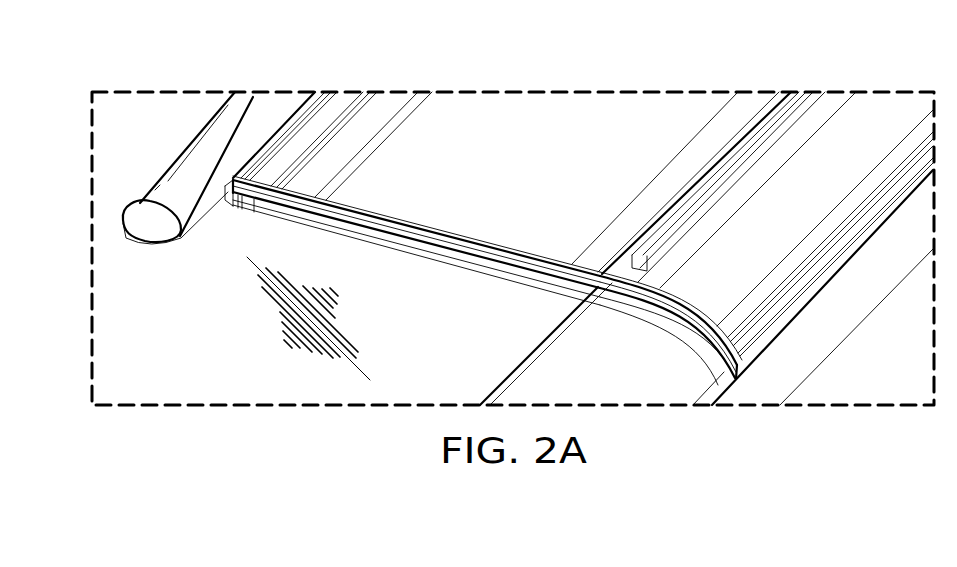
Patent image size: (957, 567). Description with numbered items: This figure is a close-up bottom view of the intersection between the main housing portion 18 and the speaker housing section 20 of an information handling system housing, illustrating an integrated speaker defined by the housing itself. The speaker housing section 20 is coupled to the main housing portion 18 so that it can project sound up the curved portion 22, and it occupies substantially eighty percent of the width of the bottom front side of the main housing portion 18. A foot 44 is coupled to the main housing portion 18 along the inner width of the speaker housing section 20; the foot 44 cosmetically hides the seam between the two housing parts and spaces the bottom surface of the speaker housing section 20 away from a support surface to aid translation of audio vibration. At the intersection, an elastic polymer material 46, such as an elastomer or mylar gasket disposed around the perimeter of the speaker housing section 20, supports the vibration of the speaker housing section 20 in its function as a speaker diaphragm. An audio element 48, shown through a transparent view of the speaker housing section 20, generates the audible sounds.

The main housing portion 18 is at (264, 400).
The speaker housing section 20 is at (512, 100).
The curved portion 22 is at (857, 328).
The foot 44 is at (188, 147).
The elastic polymer material 46 is at (733, 370).
The audio element 48 is at (385, 150).